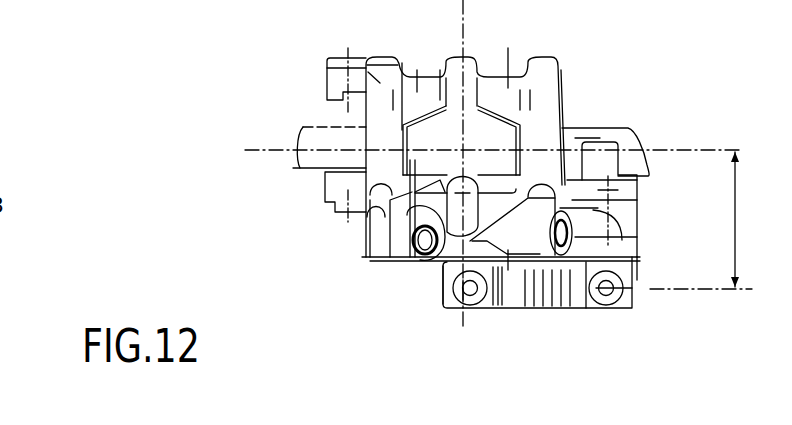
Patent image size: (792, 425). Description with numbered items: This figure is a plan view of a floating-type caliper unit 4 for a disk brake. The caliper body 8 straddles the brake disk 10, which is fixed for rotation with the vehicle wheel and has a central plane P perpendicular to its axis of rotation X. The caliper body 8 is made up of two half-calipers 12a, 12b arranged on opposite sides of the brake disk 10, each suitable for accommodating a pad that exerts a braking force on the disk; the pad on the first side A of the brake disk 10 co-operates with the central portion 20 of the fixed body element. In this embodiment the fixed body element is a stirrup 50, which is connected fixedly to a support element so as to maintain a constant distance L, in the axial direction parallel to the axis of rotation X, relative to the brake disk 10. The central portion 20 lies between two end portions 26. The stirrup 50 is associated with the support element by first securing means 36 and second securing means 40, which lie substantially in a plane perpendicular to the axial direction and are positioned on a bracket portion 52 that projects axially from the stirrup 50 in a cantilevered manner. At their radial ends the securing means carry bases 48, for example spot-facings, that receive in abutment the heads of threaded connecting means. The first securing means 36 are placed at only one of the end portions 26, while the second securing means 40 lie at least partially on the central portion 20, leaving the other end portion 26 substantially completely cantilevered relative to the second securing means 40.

The caliper unit 4 is at (278, 128).
The caliper body 8 is at (543, 88).
The brake disk 10 is at (577, 133).
The half-caliper 12a is at (372, 238).
The half-caliper 12b is at (328, 72).
The central portion 20 is at (447, 317).
The end portions 26 is at (646, 224).
The first securing means 36 is at (606, 312).
The second securing means 40 is at (476, 320).
The bases 48 is at (455, 289).
The stirrup 50 is at (646, 271).
The bracket portion 52 is at (525, 302).
The first side A is at (308, 176).
The central plane P is at (658, 136).
The axis of rotation X is at (461, 42).
The distance L is at (745, 219).